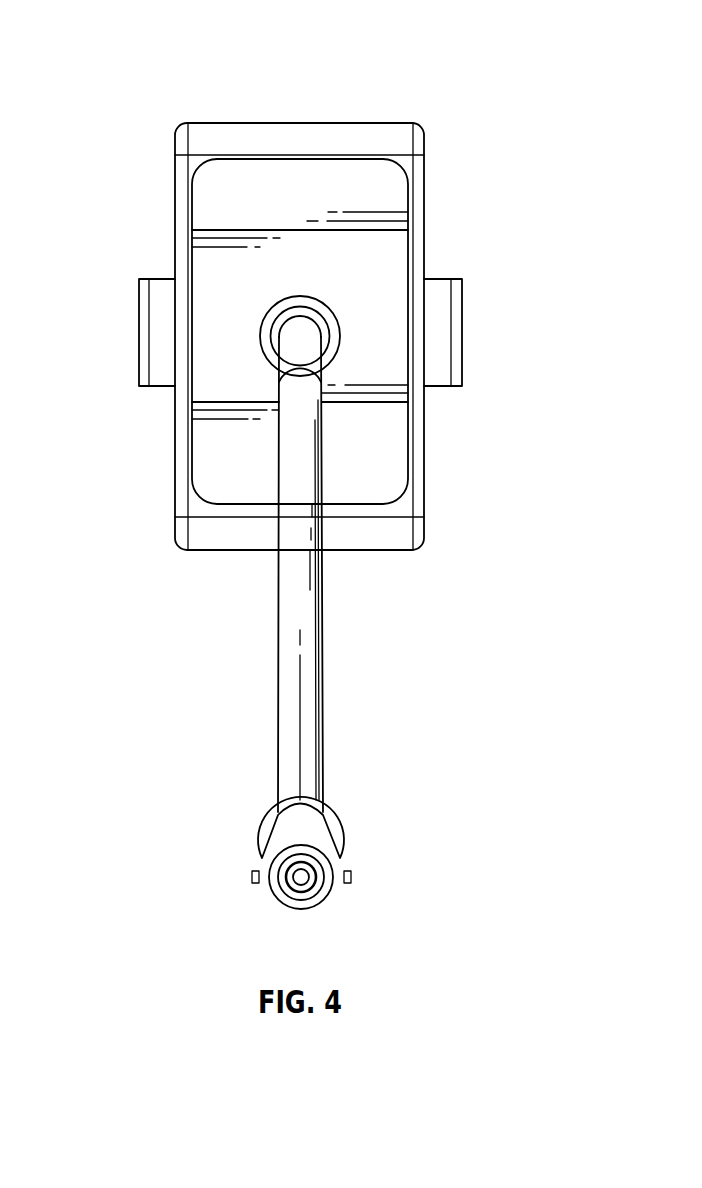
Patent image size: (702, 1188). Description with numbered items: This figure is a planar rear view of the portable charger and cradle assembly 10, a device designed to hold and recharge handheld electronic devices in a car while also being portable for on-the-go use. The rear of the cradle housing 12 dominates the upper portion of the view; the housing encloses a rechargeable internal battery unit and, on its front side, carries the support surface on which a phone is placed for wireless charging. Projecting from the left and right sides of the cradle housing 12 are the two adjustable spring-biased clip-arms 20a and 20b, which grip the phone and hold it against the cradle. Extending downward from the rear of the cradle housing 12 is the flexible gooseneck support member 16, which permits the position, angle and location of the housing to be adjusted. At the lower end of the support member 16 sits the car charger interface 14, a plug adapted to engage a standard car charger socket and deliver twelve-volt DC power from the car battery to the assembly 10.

The portable charger and cradle assembly 10 is at (412, 89).
The cradle housing 12 is at (211, 128).
The car charger interface 14 is at (275, 835).
The support member 16 is at (290, 680).
The clip-arm 20a is at (462, 345).
The clip-arm 20b is at (138, 333).